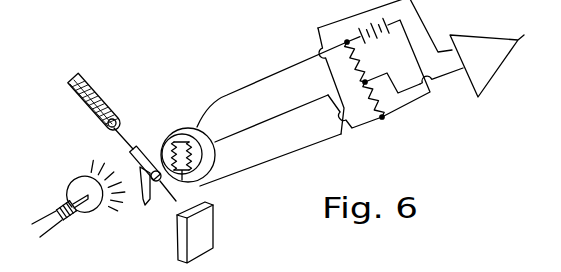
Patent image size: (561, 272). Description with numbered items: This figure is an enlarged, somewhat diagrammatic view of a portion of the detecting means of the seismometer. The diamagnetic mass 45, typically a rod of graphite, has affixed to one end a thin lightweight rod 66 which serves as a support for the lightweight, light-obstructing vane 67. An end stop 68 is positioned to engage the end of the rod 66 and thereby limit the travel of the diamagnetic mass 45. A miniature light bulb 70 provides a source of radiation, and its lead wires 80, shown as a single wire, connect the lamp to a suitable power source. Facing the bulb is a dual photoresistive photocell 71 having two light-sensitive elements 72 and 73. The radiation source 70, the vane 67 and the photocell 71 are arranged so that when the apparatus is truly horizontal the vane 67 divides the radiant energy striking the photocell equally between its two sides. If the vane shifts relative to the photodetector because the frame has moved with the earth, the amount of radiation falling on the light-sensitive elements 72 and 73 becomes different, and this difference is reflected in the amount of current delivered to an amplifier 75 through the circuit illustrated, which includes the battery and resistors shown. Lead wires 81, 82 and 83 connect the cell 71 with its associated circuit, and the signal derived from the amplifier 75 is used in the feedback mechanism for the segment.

The diamagnetic mass 45 is at (92, 86).
The thin lightweight rod 66 is at (130, 148).
The light-obstructing vane 67 is at (143, 200).
The end stop 68 is at (202, 238).
The miniature light bulb 70 is at (88, 210).
The dual photoresistive photocell 71 is at (177, 133).
The light-sensitive element 72 is at (168, 136).
The light-sensitive element 73 is at (193, 167).
The amplifier 75 is at (486, 68).
The lead wires 80 is at (50, 230).
The lead wire 81 is at (299, 153).
The lead wire 82 is at (221, 95).
The lead wire 83 is at (272, 123).